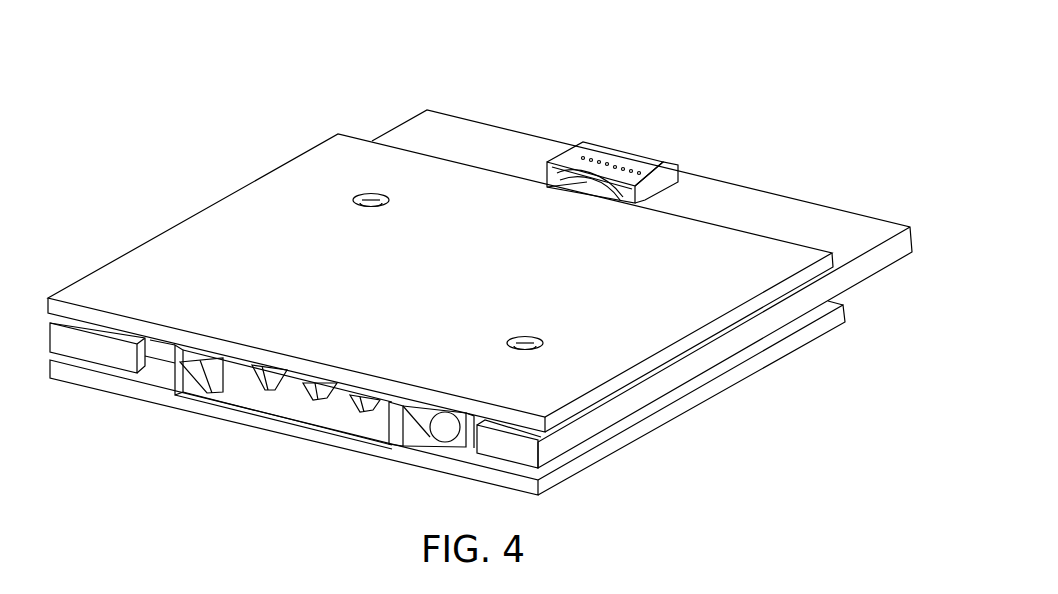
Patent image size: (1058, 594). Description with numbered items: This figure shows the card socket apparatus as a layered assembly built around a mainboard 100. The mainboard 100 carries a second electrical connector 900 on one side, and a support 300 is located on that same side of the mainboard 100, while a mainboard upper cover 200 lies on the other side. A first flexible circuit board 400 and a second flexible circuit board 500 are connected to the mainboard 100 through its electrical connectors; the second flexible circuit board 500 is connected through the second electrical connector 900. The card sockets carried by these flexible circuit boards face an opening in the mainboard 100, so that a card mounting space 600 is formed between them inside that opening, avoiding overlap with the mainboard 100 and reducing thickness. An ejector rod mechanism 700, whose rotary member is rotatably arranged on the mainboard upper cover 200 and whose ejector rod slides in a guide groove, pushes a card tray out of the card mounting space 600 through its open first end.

The mainboard 100 is at (455, 137).
The mainboard upper cover 200 is at (360, 446).
The support 300 is at (268, 202).
The first flexible circuit board 400 is at (240, 380).
The second flexible circuit board 500 is at (550, 187).
The card mounting space 600 is at (207, 352).
The ejector rod mechanism 700 is at (445, 432).
The second electrical connector 900 is at (612, 167).